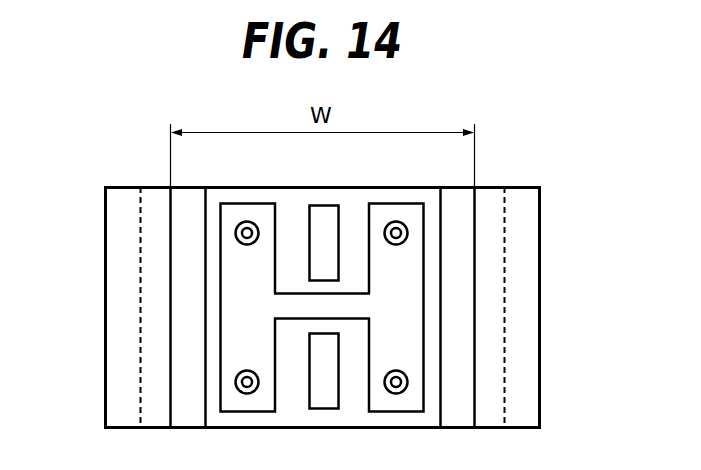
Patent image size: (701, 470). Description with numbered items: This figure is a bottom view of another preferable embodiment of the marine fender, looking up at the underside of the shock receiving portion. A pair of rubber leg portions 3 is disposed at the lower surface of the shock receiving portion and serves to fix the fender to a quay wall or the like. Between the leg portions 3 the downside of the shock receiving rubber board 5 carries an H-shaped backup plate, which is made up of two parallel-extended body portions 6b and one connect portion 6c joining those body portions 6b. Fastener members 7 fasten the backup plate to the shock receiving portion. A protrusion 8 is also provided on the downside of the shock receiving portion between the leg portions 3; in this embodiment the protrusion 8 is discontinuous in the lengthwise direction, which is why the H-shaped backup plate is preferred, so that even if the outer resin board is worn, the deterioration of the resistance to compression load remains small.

The leg portion 3 is at (123, 393).
The shock receiving rubber board 5 is at (405, 307).
The body portion 6b is at (247, 214).
The connect portion 6c is at (338, 309).
The fastener member 7 is at (235, 233).
The protrusion 8 is at (322, 213).